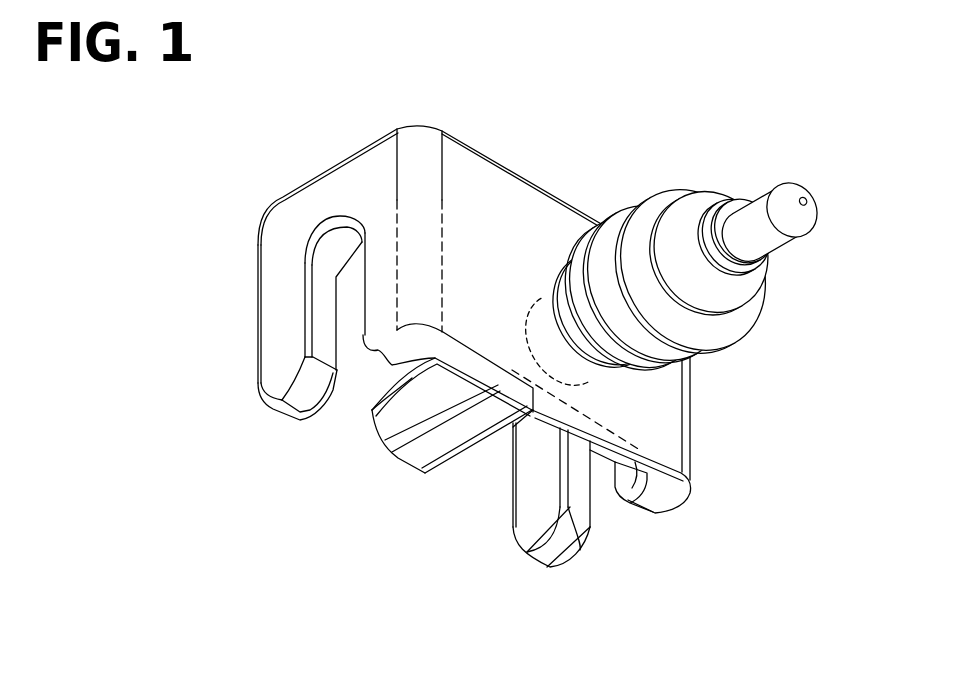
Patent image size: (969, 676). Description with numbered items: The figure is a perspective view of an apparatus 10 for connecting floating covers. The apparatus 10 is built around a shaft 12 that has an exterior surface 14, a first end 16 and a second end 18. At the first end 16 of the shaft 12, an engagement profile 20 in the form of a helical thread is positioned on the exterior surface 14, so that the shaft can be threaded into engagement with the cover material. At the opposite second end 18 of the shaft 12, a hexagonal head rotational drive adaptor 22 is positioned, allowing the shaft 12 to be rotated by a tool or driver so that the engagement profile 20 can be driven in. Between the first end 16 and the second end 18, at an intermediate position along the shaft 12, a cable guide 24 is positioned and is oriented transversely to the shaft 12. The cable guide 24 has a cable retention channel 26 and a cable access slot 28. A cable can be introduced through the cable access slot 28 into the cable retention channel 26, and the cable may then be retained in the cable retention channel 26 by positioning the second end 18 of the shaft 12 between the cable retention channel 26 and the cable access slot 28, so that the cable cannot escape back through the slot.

The apparatus 10 is at (712, 108).
The shaft 12 is at (453, 458).
The exterior surface 14 is at (415, 458).
The first end 16 is at (815, 216).
The second end 18 is at (386, 427).
The engagement profile 20 is at (753, 299).
The hexagonal head rotational drive adaptor 22 is at (418, 473).
The cable guide 24 is at (482, 156).
The cable retention channel 26 is at (353, 273).
The cable access slot 28 is at (347, 352).